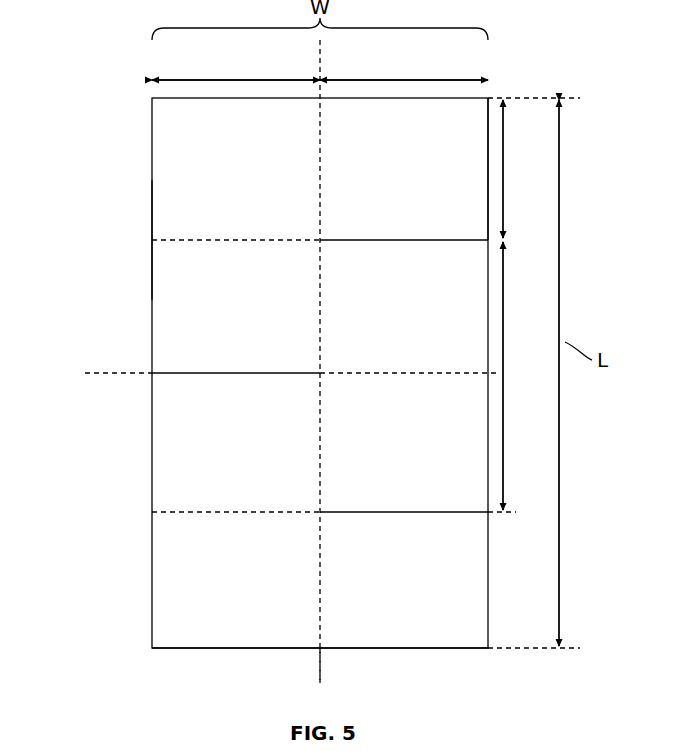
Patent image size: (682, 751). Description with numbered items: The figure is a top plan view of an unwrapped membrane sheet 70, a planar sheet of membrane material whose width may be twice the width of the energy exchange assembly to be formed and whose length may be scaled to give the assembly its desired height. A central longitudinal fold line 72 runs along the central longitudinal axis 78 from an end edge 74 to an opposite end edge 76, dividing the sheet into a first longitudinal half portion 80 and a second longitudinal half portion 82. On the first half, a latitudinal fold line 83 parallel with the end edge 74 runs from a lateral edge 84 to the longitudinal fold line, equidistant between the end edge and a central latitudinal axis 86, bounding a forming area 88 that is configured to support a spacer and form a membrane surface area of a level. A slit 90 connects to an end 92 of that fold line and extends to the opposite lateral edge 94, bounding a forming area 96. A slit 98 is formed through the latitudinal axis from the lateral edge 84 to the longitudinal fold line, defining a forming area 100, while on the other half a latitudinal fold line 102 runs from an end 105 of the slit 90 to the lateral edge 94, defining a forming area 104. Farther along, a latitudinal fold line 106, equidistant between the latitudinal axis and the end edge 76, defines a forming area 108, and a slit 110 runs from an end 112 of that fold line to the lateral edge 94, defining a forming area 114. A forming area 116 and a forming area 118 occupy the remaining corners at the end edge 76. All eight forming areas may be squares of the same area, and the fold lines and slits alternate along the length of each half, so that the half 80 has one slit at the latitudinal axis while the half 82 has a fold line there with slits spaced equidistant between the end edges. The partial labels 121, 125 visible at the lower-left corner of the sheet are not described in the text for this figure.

The unwrapped membrane sheet 70 is at (125, 68).
The central longitudinal fold line 72 is at (320, 157).
The end edge 74 is at (256, 98).
The opposite end edge 76 is at (285, 648).
The central longitudinal axis 78 is at (322, 665).
The first longitudinal half portion 80 is at (205, 648).
The second longitudinal half portion 82 is at (438, 648).
The latitudinal fold line 83 is at (220, 238).
The lateral edge 84 is at (150, 258).
The central latitudinal axis 86 is at (101, 378).
The forming area 88 is at (238, 163).
The slit 90 is at (434, 240).
The end of latitudinal fold line 92 is at (320, 240).
The lateral edge 94 is at (488, 190).
The forming area 96 is at (417, 161).
The slit 98 is at (230, 370).
The forming area 100 is at (243, 313).
The latitudinal fold line 102 is at (425, 375).
The forming area 104 is at (396, 313).
The end of slit 105 is at (320, 373).
The latitudinal fold line 106 is at (210, 512).
The forming area 108 is at (240, 445).
The slit 110 is at (390, 512).
The end of latitudinal fold line 112 is at (320, 512).
The forming area 114 is at (408, 443).
The forming area 116 is at (240, 580).
The forming area 118 is at (406, 580).
The adjacent figure element 121 is at (18, 745).
The adjacent figure element 125 is at (84, 750).